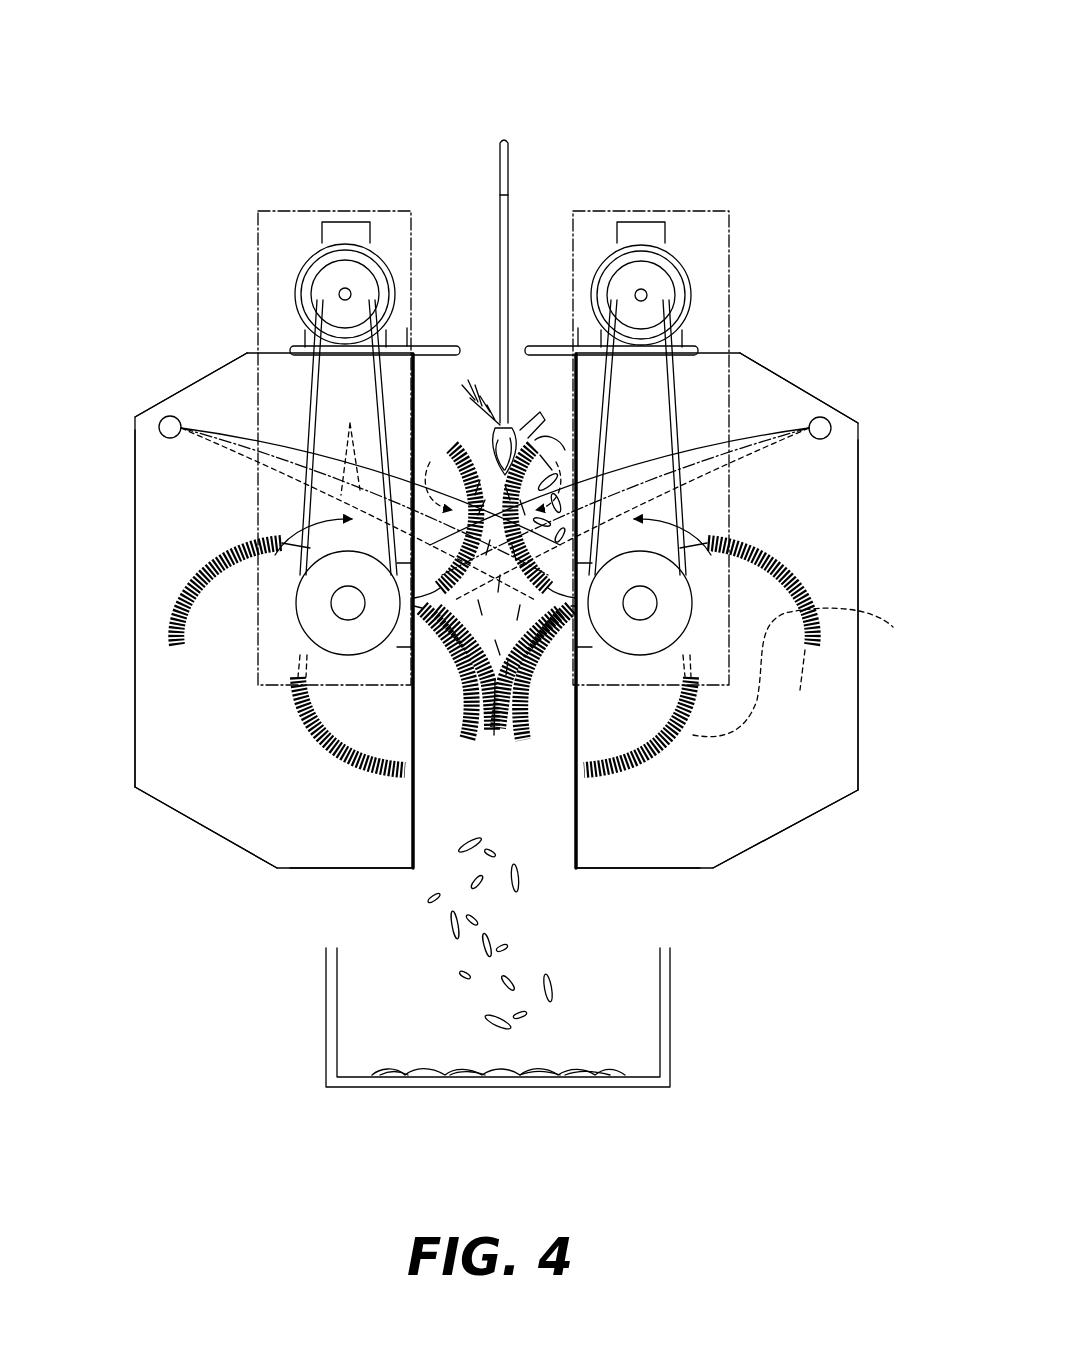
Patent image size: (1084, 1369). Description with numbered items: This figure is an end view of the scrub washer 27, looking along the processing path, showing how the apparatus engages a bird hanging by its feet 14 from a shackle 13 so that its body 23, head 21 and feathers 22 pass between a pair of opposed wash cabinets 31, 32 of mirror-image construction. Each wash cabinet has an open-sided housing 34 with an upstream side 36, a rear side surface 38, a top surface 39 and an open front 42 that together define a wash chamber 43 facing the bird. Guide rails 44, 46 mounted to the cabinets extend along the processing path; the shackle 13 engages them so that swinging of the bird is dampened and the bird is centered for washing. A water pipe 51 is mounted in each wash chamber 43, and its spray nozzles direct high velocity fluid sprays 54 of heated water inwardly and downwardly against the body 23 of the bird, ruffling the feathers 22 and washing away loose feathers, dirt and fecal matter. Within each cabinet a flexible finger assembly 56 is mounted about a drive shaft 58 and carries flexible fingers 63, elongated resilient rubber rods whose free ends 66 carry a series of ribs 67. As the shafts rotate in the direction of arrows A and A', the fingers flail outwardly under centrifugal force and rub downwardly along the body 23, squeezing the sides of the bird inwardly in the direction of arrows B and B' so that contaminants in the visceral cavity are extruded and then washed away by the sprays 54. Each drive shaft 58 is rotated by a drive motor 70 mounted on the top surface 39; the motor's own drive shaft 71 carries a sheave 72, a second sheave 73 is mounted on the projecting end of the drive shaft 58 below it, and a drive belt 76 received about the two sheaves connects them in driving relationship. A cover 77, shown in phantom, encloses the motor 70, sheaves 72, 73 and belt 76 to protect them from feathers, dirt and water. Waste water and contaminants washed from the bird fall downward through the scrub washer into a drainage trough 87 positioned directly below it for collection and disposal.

The scrub washer 27 is at (728, 66).
The shackle 13 is at (499, 186).
The feet 14 is at (467, 398).
The head 21 is at (488, 742).
The feathers 22 is at (512, 975).
The body 23 is at (467, 428).
The wash cabinet 31 is at (172, 836).
The wash cabinet 32 is at (821, 839).
The open-sided housing 34 is at (262, 811).
The upstream side 36 is at (178, 722).
The rear side surface 38 is at (135, 572).
The top surface 39 is at (213, 370).
The open front 42 is at (440, 850).
The wash chamber 43 is at (574, 655).
The guide rail 44 is at (447, 346).
The guide rail 46 is at (524, 346).
The water pipe 51 is at (159, 427).
The fluid sprays 54 is at (348, 444).
The flexible finger assembly 56 is at (237, 504).
The drive shaft 58 is at (350, 614).
The flexible fingers 63 is at (456, 668).
The distal end 66 is at (478, 745).
The ribs 67 is at (535, 723).
The drive motor 70 is at (296, 284).
The drive shaft 71 is at (352, 294).
The sheave 72 is at (345, 278).
The sheave 73 is at (302, 615).
The drive belt 76 is at (676, 410).
The cover 77 is at (275, 210).
The drainage trough 87 is at (670, 1033).